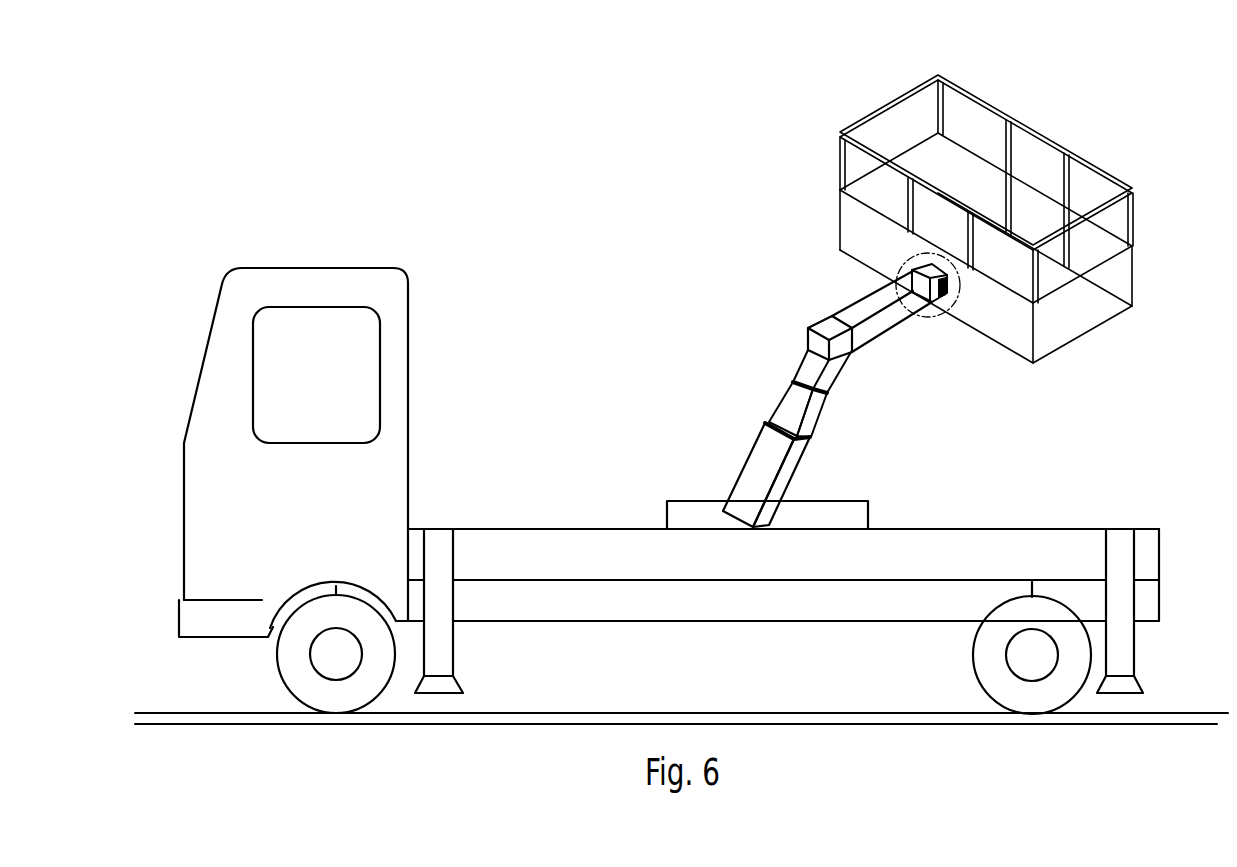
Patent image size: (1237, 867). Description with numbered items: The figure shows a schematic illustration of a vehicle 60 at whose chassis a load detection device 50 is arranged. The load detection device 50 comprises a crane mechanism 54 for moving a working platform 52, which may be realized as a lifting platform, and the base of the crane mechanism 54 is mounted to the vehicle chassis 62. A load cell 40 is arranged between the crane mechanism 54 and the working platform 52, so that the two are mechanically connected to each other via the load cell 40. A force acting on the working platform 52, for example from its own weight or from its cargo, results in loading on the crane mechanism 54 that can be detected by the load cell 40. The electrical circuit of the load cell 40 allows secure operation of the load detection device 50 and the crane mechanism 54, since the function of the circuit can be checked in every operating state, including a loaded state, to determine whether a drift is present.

The load cell 40 is at (927, 259).
The load detection device 50 is at (929, 219).
The working platform 52 is at (1106, 171).
The crane mechanism 54 is at (805, 342).
The vehicle 60 is at (1178, 86).
The vehicle chassis 62 is at (704, 468).